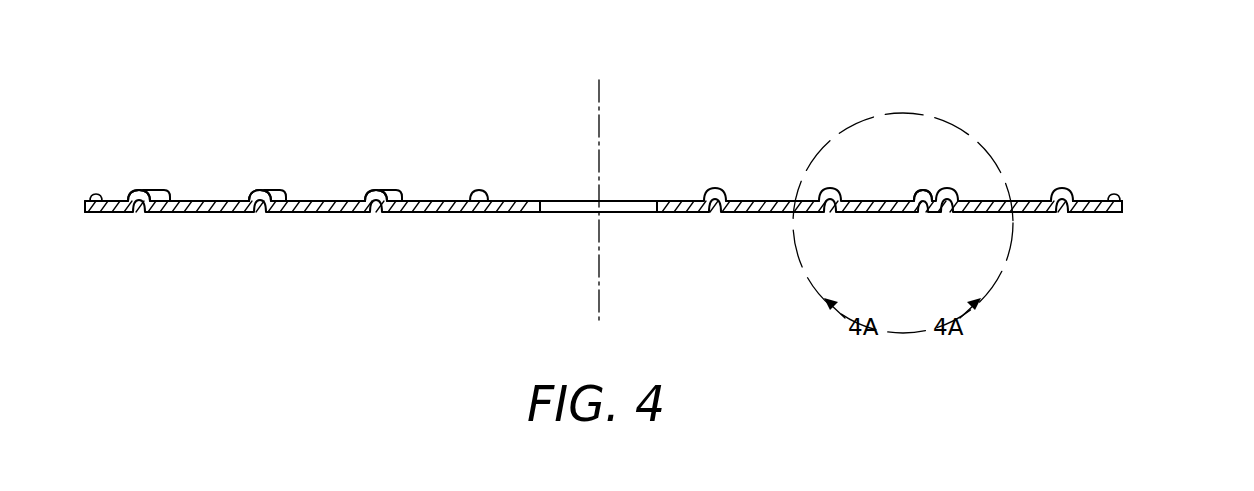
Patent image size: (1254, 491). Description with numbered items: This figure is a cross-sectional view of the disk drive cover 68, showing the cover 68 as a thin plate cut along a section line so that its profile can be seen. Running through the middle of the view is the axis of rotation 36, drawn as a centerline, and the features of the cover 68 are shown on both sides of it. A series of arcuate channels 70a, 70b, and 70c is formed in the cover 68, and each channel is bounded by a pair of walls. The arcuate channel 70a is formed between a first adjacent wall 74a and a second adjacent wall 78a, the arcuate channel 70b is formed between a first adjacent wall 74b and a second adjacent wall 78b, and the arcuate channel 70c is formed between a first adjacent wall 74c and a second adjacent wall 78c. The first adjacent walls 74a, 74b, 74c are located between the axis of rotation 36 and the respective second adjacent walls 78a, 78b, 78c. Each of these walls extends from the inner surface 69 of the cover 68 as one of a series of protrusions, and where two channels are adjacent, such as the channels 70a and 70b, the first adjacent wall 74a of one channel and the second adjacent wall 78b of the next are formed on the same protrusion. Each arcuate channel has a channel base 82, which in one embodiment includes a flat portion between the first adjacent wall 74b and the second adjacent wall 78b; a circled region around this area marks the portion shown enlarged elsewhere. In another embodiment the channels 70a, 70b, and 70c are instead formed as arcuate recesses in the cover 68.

The axis of rotation 36 is at (600, 120).
The cover 68 is at (85, 213).
The inner surface 69 is at (1095, 190).
The arcuate channel 70a is at (192, 182).
The arcuate channel 70b is at (312, 182).
The arcuate channel 70c is at (433, 182).
The first adjacent wall 74a is at (249, 190).
The first adjacent wall 74b is at (364, 190).
The first adjacent wall 74c is at (478, 190).
The second adjacent wall 78a is at (172, 214).
The second adjacent wall 78b is at (283, 214).
The second adjacent wall 78c is at (398, 214).
The channel base 82 is at (928, 214).